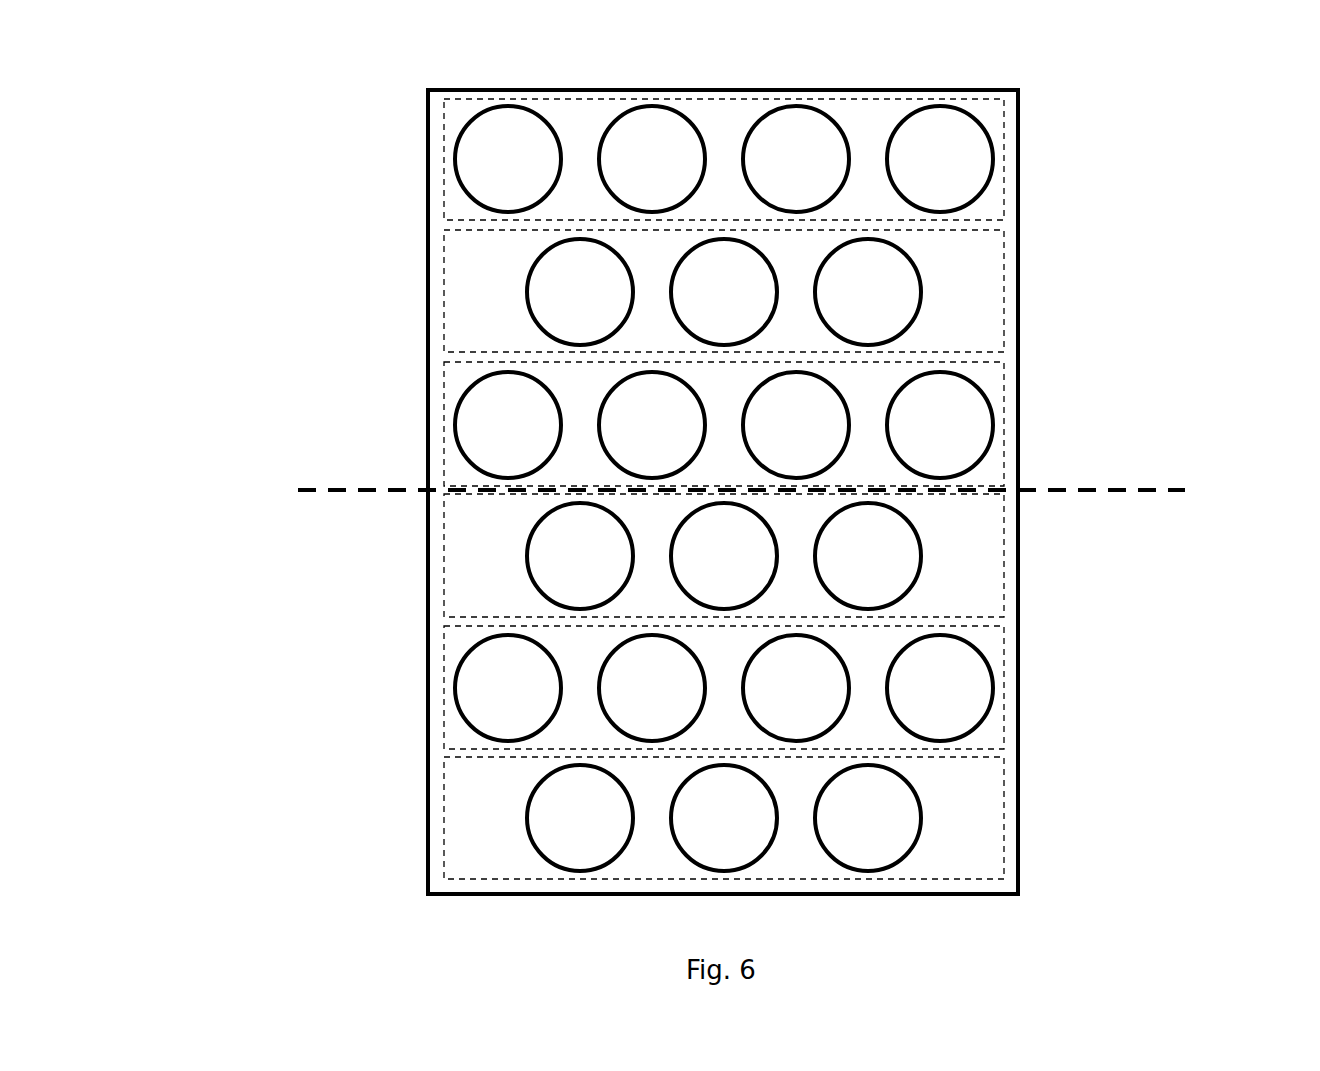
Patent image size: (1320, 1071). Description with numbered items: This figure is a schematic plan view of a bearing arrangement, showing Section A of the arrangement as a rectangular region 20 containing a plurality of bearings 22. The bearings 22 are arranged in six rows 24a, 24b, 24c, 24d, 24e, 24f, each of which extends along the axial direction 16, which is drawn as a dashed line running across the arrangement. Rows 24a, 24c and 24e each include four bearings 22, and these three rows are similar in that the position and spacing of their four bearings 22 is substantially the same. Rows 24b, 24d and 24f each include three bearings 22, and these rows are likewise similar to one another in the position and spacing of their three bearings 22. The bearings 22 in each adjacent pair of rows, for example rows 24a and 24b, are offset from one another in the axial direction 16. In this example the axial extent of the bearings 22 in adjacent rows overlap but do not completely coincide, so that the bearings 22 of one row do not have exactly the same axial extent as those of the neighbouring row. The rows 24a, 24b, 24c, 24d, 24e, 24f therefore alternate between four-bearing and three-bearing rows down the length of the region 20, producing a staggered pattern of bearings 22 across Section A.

The mat / support plate 20 is at (1018, 257).
The bearing 22 is at (923, 818).
The axial direction 16 is at (298, 489).
The row 24a is at (440, 170).
The row 24b is at (443, 290).
The row 24c is at (443, 435).
The row 24d is at (443, 545).
The row 24e is at (443, 690).
The row 24f is at (672, 857).
The Section A is at (1145, 198).